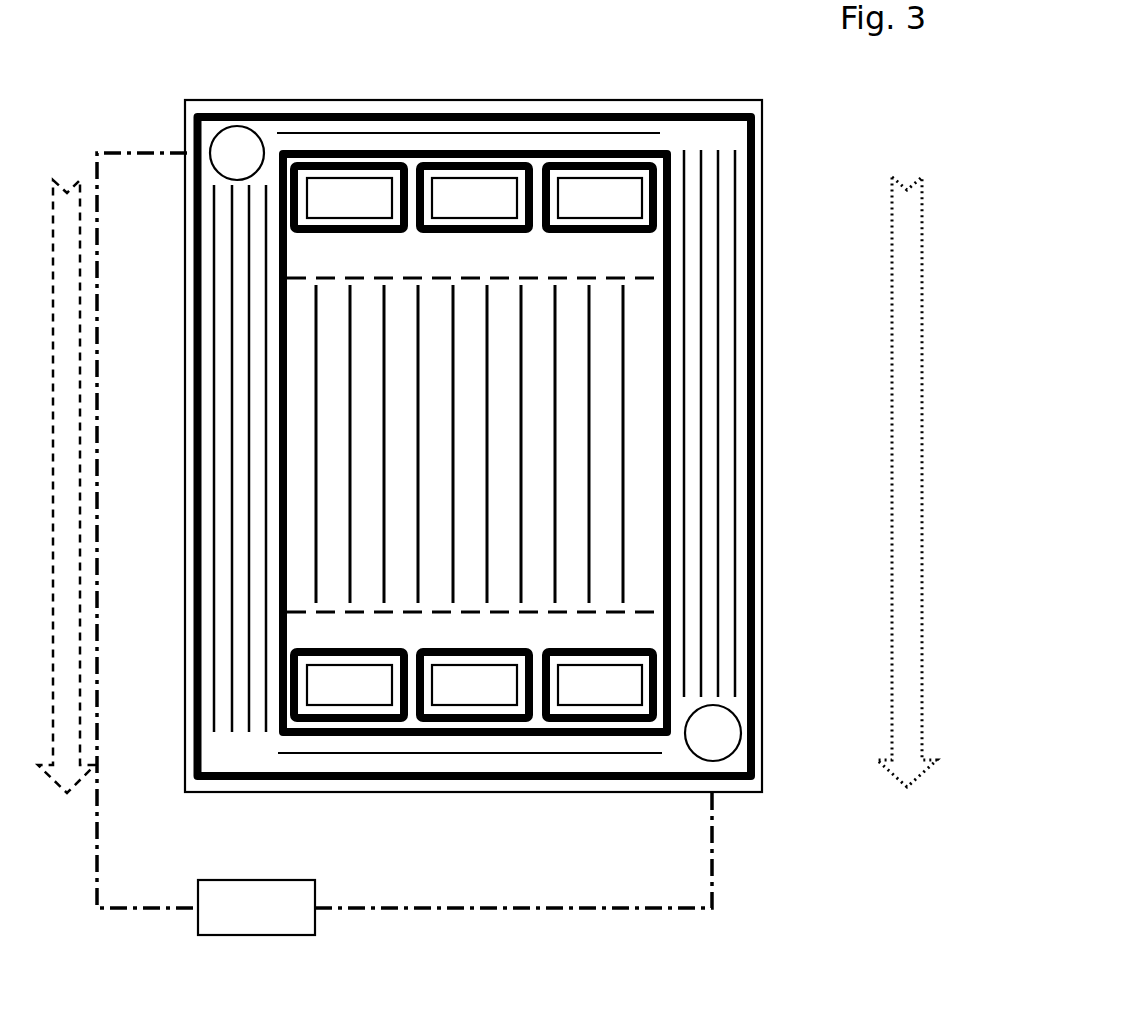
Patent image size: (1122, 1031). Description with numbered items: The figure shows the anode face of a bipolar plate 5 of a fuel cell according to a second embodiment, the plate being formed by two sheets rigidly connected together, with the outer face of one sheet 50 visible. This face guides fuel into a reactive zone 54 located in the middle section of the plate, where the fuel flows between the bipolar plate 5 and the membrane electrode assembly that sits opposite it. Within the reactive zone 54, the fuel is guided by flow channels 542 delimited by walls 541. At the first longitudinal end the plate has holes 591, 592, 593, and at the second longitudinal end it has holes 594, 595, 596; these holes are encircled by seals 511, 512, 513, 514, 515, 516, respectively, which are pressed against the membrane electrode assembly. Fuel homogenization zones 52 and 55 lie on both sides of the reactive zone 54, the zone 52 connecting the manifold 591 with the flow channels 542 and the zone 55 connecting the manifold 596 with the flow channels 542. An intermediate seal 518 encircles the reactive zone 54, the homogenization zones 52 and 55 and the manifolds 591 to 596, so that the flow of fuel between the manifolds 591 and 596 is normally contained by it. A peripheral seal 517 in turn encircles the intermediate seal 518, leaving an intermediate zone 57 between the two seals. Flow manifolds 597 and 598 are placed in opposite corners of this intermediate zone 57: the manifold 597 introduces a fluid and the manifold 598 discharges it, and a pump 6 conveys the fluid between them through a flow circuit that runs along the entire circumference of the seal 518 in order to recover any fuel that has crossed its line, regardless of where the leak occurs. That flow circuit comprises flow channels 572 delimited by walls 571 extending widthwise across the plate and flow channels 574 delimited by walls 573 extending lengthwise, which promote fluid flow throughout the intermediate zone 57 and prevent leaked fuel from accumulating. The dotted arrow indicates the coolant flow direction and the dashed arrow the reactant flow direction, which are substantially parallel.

The bipolar plate 5 is at (772, 275).
The pump 6 is at (249, 921).
The sheet 50 is at (765, 530).
The fuel homogenization zone 52 is at (307, 263).
The reactive zone 54 is at (307, 401).
The fuel homogenization zone 55 is at (307, 630).
The intermediate zone 57 is at (713, 129).
The seal 511 is at (348, 162).
The seal 512 is at (602, 162).
The seal 513 is at (475, 162).
The seal 514 is at (480, 722).
The seal 515 is at (350, 722).
The seal 516 is at (600, 722).
The peripheral seal 517 is at (757, 443).
The intermediate seal 518 is at (277, 442).
The walls 541 is at (627, 400).
The flow channels 542 is at (307, 426).
The walls 571 is at (547, 132).
The flow channels 572 is at (592, 124).
The walls 573 is at (737, 589).
The flow channels 574 is at (740, 650).
The hole (manifold) 591 is at (330, 209).
The hole (manifold) 592 is at (581, 209).
The hole (manifold) 593 is at (455, 209).
The hole (manifold) 594 is at (455, 696).
The hole (manifold) 595 is at (330, 696).
The hole (manifold) 596 is at (581, 696).
The flow manifold 597 is at (210, 122).
The flow manifold 598 is at (694, 759).